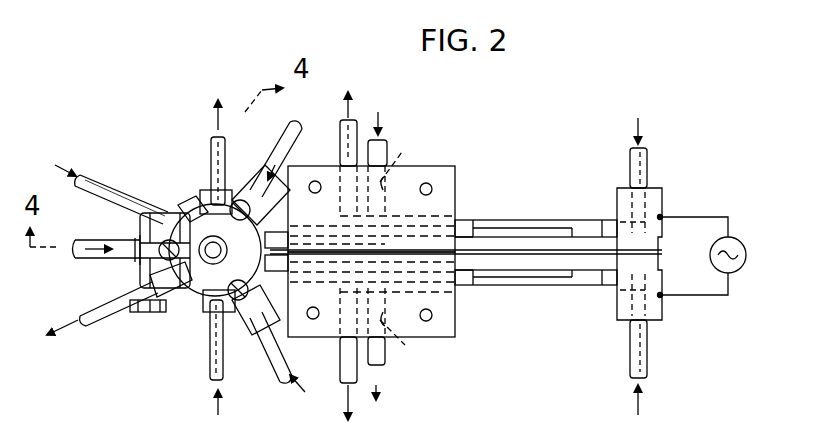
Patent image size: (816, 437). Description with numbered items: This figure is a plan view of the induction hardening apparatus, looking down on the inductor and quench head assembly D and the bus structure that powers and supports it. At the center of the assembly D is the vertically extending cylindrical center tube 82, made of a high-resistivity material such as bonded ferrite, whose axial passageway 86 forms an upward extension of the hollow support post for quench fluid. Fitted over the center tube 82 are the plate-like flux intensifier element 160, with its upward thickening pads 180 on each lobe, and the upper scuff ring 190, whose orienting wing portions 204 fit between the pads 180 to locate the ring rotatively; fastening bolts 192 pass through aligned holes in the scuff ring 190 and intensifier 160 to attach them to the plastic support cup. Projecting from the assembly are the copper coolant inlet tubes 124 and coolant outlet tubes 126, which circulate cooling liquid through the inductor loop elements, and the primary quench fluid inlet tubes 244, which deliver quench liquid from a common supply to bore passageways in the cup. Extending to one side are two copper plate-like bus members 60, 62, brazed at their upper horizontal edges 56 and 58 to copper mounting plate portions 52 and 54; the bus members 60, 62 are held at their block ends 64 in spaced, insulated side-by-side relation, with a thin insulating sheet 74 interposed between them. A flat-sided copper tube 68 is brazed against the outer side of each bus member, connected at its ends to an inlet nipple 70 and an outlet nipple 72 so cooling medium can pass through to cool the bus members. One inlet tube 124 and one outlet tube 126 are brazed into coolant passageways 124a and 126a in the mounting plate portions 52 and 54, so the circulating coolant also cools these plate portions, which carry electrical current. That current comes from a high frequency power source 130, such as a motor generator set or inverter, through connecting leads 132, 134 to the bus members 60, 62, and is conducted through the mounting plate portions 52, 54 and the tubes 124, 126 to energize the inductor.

The mounting plate portion 52 is at (455, 180).
The mounting plate portion 54 is at (455, 345).
The upper horizontal edge 56 is at (476, 236).
The upper horizontal edge 58 is at (476, 272).
The bus member 60 is at (528, 232).
The bus member 62 is at (528, 277).
The block end 64 is at (620, 200).
The flat-sided copper tube 68 is at (508, 228).
The inlet nipple 70 is at (647, 165).
The outlet nipple 72 is at (340, 144).
The thin sheet of electrical insulating material 74 is at (585, 250).
The center tube 82 is at (196, 242).
The axial passageway 86 is at (215, 264).
The coolant inlet tube 124 is at (95, 175).
The coolant passageway 124a is at (400, 160).
The coolant outlet tube 126 is at (210, 140).
The coolant passageway 126a is at (405, 345).
The high frequency power source 130 is at (740, 240).
The connecting lead 132 is at (688, 217).
The connecting lead 134 is at (700, 295).
The flux intensifier element 160 is at (200, 300).
The thickening pad 180 is at (165, 218).
The upper scuff ring 190 is at (185, 205).
The fastening bolt 192 is at (140, 265).
The orienting wing portion 204 is at (130, 232).
The primary quench fluid inlet tube 244 is at (265, 150).
The inductor and quench head assembly D is at (172, 200).